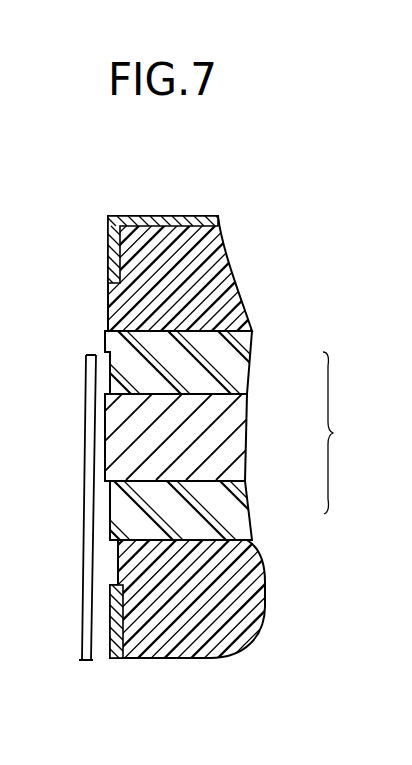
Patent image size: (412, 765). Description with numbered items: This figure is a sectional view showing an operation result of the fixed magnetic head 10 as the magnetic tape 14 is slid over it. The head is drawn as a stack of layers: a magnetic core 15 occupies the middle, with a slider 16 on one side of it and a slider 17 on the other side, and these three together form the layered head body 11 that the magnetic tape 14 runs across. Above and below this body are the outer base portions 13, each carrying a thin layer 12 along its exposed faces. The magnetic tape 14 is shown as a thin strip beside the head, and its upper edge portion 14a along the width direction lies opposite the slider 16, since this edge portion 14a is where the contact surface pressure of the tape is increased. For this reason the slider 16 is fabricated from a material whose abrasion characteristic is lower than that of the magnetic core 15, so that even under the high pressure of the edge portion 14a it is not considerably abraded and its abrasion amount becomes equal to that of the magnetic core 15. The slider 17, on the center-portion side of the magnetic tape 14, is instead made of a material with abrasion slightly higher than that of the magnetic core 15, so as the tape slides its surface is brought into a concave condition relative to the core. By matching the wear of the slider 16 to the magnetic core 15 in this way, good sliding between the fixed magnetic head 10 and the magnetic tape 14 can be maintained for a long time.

The fixed magnetic head 10 is at (84, 303).
The laminated ring body 11 is at (350, 433).
The coating layer 12 is at (110, 249).
The ring base member 13 is at (232, 270).
The magnetic tape 14 is at (84, 505).
The edge portion of the magnetic tape 14a is at (88, 357).
The magnetic core 15 is at (237, 443).
The slider 16 is at (248, 362).
The slider 17 is at (248, 510).